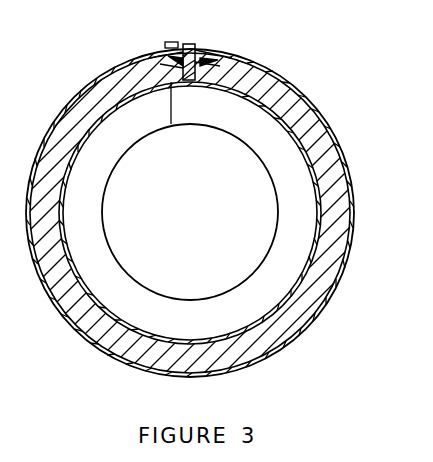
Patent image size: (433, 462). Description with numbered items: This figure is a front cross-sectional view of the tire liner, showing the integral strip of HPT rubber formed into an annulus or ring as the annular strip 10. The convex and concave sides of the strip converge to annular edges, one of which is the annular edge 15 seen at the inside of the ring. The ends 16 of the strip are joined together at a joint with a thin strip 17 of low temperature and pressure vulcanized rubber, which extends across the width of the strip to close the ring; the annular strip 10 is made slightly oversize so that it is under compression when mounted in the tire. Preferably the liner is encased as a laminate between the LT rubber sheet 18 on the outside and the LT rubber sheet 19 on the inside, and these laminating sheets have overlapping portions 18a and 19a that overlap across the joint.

The annular strip 10 is at (356, 214).
The annular edge 15 is at (107, 177).
The ends 16 is at (165, 50).
The thin strip of rubber 17 is at (195, 47).
The LT rubber sheet 18 is at (300, 84).
The overlapping portion 18a is at (171, 42).
The LT rubber sheet 19 is at (332, 144).
The overlapping portion 19a is at (182, 125).